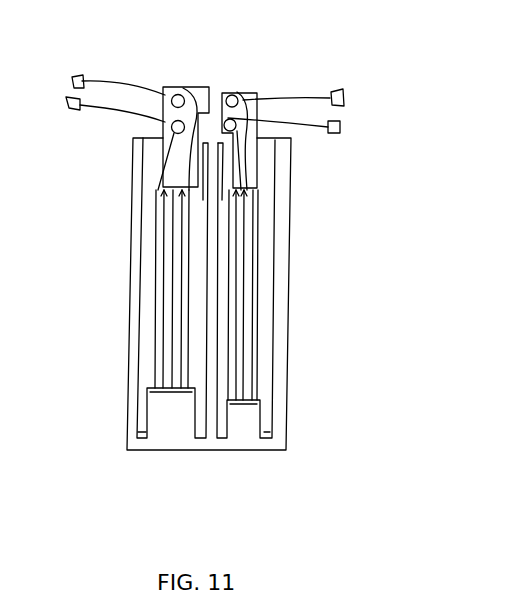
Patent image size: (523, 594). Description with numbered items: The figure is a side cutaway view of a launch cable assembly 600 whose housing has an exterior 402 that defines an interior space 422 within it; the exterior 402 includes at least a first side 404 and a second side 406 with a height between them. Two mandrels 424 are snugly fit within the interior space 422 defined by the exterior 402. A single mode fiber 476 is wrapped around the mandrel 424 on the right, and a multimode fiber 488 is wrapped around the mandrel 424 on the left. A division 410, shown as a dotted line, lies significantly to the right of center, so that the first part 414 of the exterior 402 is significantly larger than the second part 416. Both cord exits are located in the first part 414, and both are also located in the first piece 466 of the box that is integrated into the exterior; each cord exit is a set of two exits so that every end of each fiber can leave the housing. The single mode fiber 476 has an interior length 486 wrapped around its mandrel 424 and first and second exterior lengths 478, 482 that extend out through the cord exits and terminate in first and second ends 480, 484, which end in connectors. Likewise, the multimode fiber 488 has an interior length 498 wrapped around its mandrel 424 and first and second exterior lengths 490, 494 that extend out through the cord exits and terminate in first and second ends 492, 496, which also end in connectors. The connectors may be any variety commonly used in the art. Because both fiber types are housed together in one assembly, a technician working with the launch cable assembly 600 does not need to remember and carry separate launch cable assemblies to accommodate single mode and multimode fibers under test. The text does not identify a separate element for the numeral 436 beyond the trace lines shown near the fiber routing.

The launch cable assembly 600 is at (97, 458).
The exterior 402 is at (286, 285).
The first side 404 is at (125, 368).
The second side 406 is at (286, 375).
The division 410 is at (250, 448).
The first part 414 is at (159, 443).
The second part 416 is at (277, 443).
The interior space 422 is at (178, 430).
The mandrel 424 is at (147, 328).
The conductive trace 436 is at (215, 90).
The first piece 466 is at (199, 89).
The single mode fiber 476 is at (305, 80).
The first exterior length 478 is at (310, 128).
The first end 480 is at (341, 127).
The second exterior length 482 is at (278, 97).
The second end 484 is at (344, 98).
The interior length 486 is at (255, 225).
The multimode fiber 488 is at (146, 52).
The first exterior length 490 is at (118, 115).
The first end 492 is at (75, 107).
The second exterior length 494 is at (110, 82).
The second end 496 is at (73, 78).
The interior length 498 is at (157, 263).